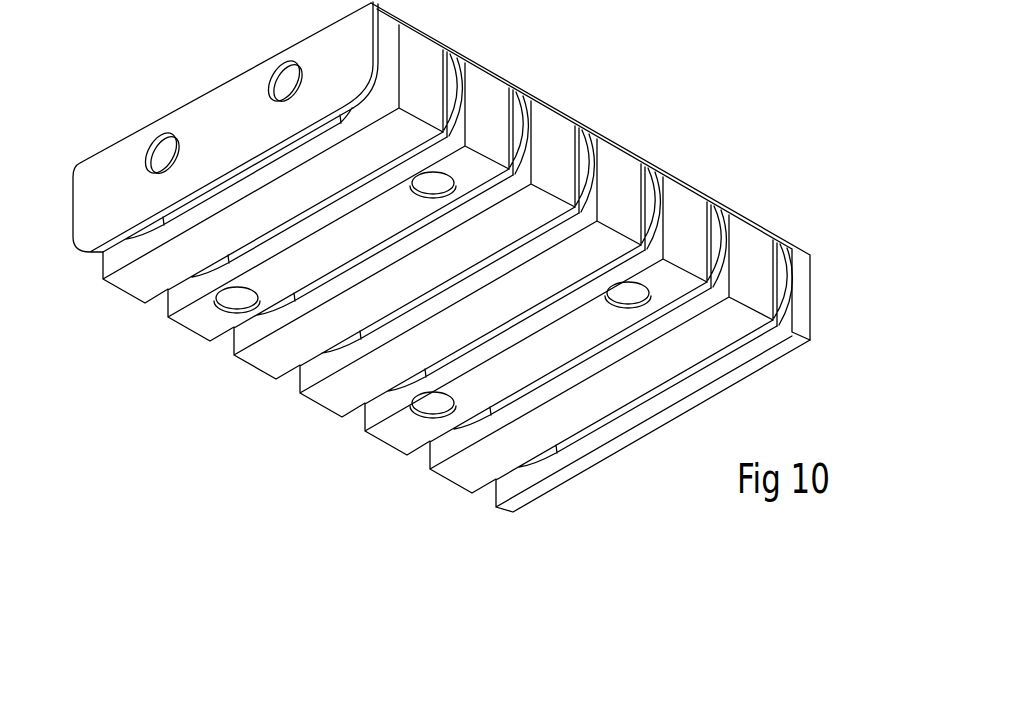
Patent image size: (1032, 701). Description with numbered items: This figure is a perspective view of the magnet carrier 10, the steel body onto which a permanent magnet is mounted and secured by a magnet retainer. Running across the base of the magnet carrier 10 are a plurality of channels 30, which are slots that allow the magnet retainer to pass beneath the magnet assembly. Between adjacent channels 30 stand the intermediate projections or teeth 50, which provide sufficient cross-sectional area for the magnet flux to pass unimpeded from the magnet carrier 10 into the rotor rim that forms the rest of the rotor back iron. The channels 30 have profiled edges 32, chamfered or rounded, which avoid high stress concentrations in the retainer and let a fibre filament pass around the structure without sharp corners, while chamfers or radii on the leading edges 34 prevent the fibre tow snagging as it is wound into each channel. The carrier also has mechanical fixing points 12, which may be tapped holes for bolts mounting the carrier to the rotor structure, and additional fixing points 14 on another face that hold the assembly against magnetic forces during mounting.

The magnet carrier 10 is at (582, 507).
The mechanical fixing points 12 is at (434, 421).
The additional fixing points 14 is at (158, 150).
The channels 30 is at (181, 309).
The profiled edges 32 is at (775, 265).
The leading edges 34 is at (655, 192).
The teeth 50 is at (277, 370).